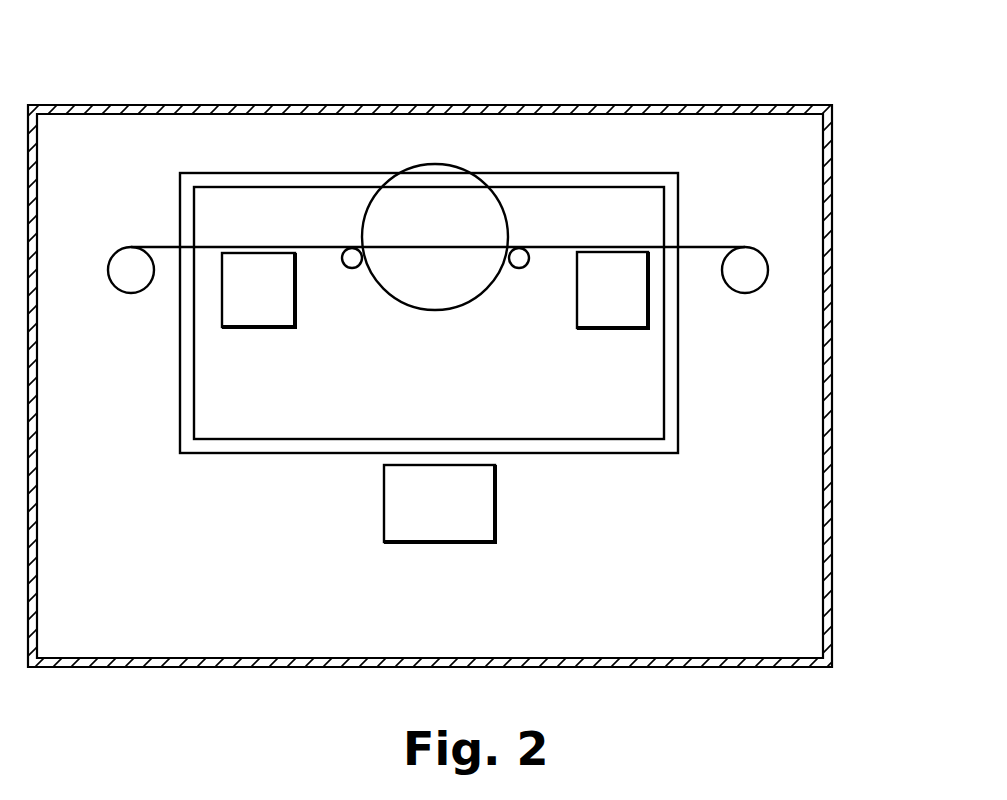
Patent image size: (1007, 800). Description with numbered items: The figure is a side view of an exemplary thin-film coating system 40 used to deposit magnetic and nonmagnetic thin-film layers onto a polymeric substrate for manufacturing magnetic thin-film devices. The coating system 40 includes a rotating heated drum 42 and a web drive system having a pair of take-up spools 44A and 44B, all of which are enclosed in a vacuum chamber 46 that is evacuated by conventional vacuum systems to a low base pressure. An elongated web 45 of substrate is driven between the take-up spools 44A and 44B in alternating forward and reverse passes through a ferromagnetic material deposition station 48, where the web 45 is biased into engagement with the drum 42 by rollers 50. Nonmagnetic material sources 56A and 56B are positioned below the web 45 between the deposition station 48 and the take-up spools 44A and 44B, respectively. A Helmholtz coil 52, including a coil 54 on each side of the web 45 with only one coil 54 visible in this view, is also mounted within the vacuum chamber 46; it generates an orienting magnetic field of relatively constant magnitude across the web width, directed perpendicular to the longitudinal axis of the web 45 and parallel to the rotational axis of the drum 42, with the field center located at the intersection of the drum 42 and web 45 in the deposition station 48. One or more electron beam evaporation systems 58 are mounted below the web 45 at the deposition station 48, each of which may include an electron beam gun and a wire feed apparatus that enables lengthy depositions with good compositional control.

The thin-film coating system 40 is at (672, 90).
The rotating heated drum 42 is at (435, 165).
The take-up spool 44A is at (130, 268).
The take-up spool 44B is at (755, 270).
The elongated web 45 is at (705, 247).
The vacuum chamber 46 is at (153, 667).
The ferromagnetic material deposition station 48 is at (395, 378).
The rollers 50 is at (352, 248).
The Helmholtz coil 52 is at (175, 430).
The coil 54 is at (202, 455).
The nonmagnetic material source 56A is at (238, 308).
The nonmagnetic material source 56B is at (612, 313).
The electron beam evaporation system 58 is at (437, 528).